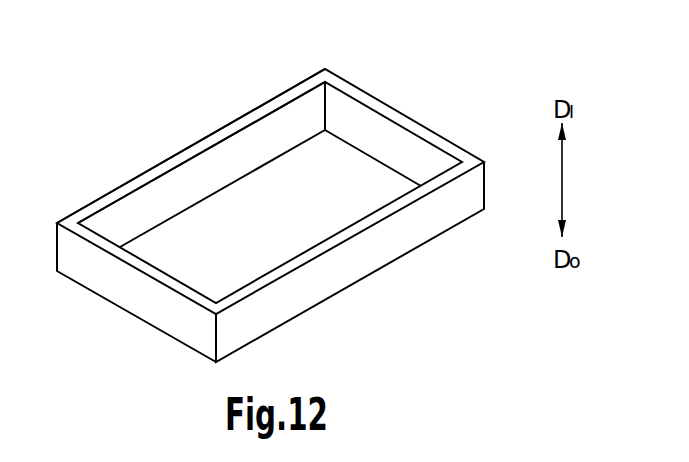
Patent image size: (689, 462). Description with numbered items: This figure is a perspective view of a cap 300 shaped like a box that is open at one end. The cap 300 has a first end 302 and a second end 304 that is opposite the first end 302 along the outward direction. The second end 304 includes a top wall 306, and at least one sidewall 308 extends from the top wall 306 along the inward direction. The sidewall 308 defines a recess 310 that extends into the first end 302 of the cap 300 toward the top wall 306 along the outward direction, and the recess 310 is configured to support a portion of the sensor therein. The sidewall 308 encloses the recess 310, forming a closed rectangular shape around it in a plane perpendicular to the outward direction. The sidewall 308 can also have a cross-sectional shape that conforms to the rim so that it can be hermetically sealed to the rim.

The cap 300 is at (475, 97).
The first end 302 is at (192, 147).
The second end 304 is at (338, 295).
The top wall 306 is at (296, 173).
The sidewall 308 is at (98, 265).
The recess 310 is at (247, 218).